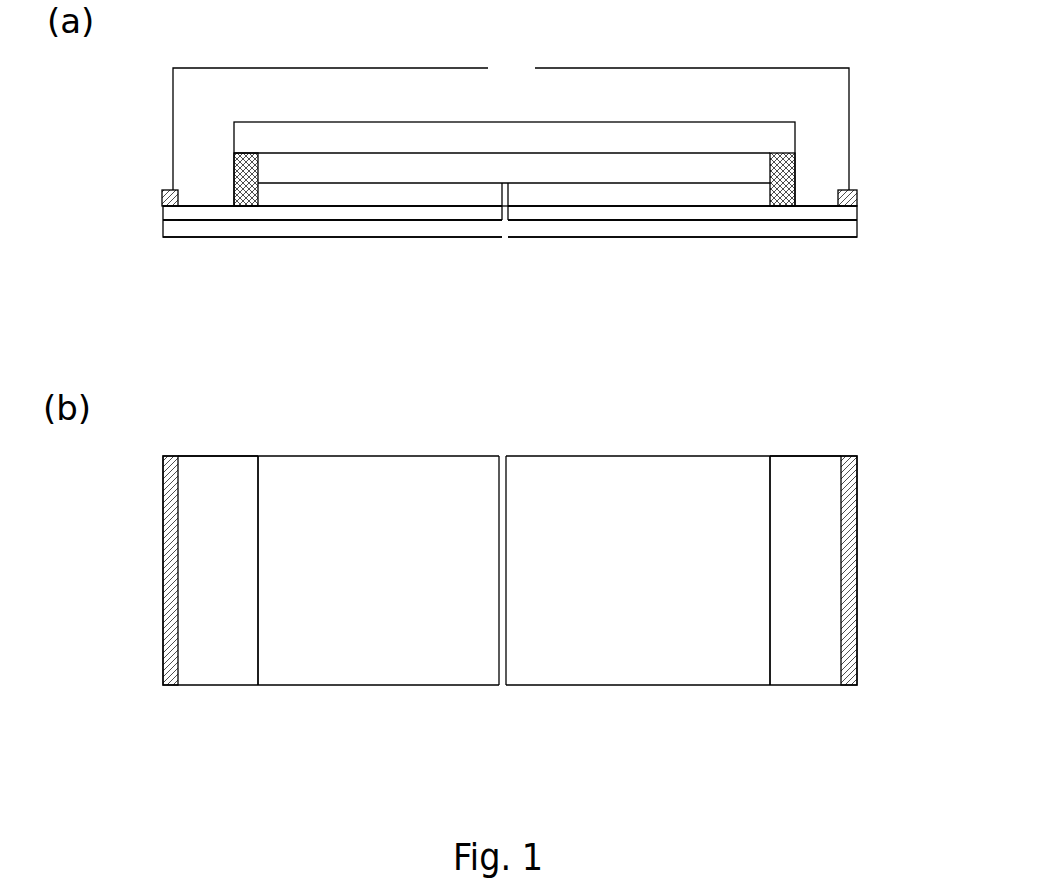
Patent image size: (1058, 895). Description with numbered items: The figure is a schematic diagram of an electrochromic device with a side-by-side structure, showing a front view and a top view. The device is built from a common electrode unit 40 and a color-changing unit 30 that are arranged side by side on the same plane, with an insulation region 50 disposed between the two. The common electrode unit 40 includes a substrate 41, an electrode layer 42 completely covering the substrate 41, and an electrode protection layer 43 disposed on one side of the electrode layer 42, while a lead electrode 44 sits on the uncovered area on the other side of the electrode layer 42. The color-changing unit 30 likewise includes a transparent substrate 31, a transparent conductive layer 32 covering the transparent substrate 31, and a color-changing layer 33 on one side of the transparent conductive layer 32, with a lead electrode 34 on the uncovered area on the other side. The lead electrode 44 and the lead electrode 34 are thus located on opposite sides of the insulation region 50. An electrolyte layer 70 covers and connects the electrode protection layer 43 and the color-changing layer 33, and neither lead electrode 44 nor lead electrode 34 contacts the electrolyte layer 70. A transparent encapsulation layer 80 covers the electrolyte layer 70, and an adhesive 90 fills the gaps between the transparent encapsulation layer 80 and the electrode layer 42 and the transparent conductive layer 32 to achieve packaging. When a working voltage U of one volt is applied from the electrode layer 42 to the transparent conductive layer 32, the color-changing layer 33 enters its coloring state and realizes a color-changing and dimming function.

The working voltage U is at (511, 117).
The color-changing unit 30 is at (750, 322).
The transparent substrate 31 is at (553, 232).
The transparent conductive layer 32 is at (760, 213).
The color-changing layer 33 is at (637, 197).
The lead electrode 34 is at (848, 202).
The common electrode unit 40 is at (380, 317).
The substrate 41 is at (428, 230).
The electrode layer 42 is at (210, 215).
The electrode protection layer 43 is at (318, 193).
The lead electrode 44 is at (162, 198).
The insulation region 50 is at (503, 220).
The electrolyte layer 70 is at (300, 166).
The transparent encapsulation layer 80 is at (753, 140).
The adhesive 90 is at (243, 170).